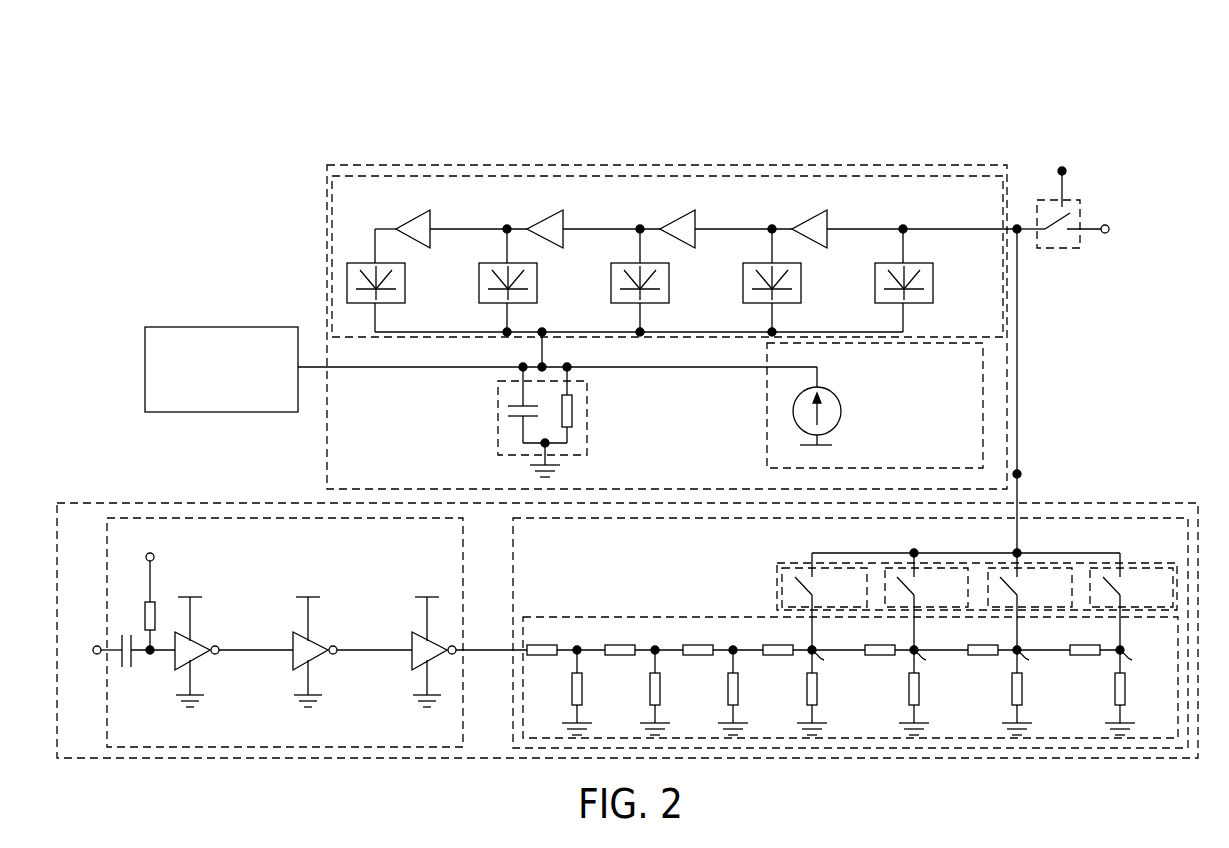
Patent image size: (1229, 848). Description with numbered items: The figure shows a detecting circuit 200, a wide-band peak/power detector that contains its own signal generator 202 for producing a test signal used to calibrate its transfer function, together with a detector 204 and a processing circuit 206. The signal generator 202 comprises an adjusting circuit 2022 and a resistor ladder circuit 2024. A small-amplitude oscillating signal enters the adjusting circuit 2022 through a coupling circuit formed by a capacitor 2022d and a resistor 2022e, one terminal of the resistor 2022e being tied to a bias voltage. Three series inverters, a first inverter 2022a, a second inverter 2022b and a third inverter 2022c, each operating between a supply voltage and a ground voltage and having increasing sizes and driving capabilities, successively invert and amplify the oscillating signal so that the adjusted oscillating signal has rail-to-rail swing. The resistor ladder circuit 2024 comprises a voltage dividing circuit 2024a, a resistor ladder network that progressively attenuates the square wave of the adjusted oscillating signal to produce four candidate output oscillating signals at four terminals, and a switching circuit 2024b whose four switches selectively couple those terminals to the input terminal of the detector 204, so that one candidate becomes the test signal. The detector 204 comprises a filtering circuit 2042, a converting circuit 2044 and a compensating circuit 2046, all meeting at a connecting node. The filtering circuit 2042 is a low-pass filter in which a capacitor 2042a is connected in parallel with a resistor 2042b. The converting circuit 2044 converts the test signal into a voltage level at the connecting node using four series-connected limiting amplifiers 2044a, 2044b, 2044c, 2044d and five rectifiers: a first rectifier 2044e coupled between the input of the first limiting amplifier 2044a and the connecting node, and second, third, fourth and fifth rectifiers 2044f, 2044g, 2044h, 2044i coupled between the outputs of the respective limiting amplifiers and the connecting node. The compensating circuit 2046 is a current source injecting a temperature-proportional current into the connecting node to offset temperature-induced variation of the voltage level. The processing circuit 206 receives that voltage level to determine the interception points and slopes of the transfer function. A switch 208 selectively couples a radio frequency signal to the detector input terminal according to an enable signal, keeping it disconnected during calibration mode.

The detecting circuit 200 is at (1115, 105).
The signal generator 202 is at (1018, 758).
The detector 204 is at (802, 165).
The processing circuit 206 is at (225, 327).
The switch 208 is at (1063, 248).
The adjusting circuit 2022 is at (358, 758).
The first inverter 2022a is at (204, 660).
The second inverter 2022b is at (322, 660).
The third inverter 2022c is at (441, 660).
The capacitor 2022d is at (125, 670).
The resistor 2022e is at (146, 612).
The resistor ladder circuit 2024 is at (1085, 748).
The voltage dividing circuit 2024a is at (1147, 738).
The switching circuit 2024b is at (1163, 563).
The filtering circuit 2042 is at (498, 442).
The capacitor 2042a is at (507, 412).
The resistor 2042b is at (572, 411).
The converting circuit 2044 is at (720, 165).
The first limiting amplifier 2044a is at (813, 214).
The second limiting amplifier 2044b is at (681, 214).
The third limiting amplifier 2044c is at (548, 214).
The fourth limiting amplifier 2044d is at (417, 214).
The first rectifier 2044e is at (933, 289).
The second rectifier 2044f is at (801, 289).
The third rectifier 2044g is at (669, 289).
The fourth rectifier 2044h is at (537, 289).
The fifth rectifier 2044i is at (405, 289).
The compensating circuit 2046 is at (983, 363).